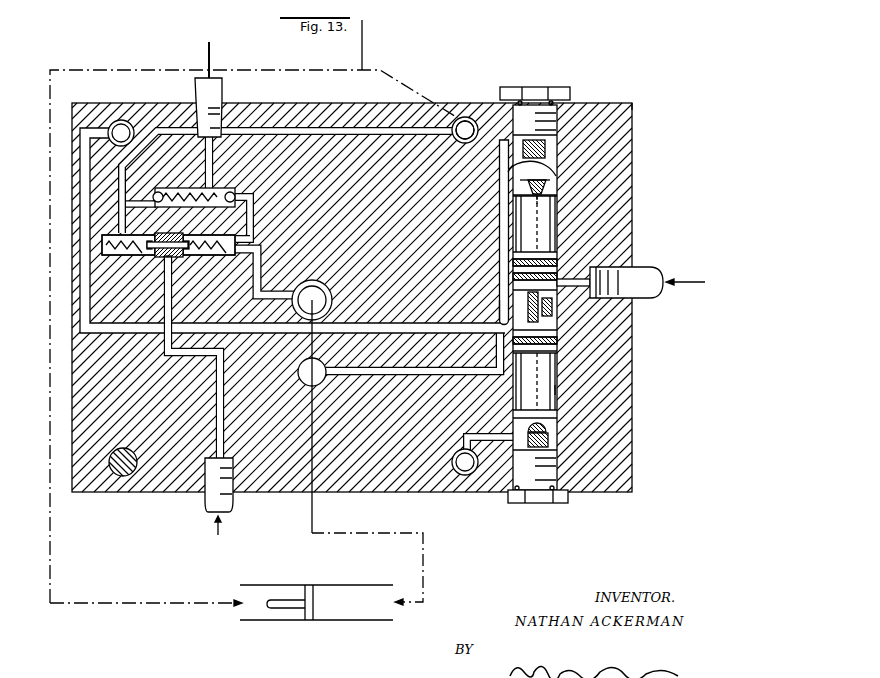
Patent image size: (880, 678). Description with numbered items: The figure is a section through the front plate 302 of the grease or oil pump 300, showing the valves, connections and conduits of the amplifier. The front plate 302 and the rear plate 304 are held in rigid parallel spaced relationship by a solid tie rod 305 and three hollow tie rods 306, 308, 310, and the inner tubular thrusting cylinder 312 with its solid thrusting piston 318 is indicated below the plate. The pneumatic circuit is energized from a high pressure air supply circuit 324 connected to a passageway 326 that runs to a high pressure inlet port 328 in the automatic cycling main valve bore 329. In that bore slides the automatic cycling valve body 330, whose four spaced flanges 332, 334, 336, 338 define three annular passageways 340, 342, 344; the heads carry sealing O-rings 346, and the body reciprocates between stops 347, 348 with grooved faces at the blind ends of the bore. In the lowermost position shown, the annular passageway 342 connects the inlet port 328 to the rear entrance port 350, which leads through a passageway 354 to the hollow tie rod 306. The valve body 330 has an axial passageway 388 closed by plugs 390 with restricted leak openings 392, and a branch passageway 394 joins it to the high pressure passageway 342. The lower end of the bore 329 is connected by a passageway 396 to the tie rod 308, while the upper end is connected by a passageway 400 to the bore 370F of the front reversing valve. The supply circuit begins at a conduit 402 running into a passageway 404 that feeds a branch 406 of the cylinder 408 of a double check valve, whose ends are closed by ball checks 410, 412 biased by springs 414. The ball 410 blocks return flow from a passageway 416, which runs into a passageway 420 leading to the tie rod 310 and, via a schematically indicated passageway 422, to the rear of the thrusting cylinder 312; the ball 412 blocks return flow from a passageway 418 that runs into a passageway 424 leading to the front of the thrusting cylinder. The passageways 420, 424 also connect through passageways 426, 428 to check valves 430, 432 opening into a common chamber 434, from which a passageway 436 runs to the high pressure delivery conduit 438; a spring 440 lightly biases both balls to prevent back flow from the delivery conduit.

The grease or oil pump 300 is at (668, 72).
The front plate 302 is at (634, 470).
The rear plate 304 is at (446, 103).
The solid tie rod 305 is at (123, 477).
The hollow tie rod 306 is at (121, 120).
The hollow tie rod 308 is at (469, 475).
The hollow tie rod 310 is at (465, 117).
The inner tubular thrusting cylinder 312 is at (328, 283).
The solid thrusting piston 318 is at (308, 622).
The high pressure air supply circuit 324 is at (650, 267).
The passageway 326 is at (595, 273).
The high pressure inlet port 328 is at (554, 295).
The automatic cycling main valve bore 329 is at (558, 392).
The automatic cycling valve body 330 is at (548, 367).
The flange 332 is at (560, 431).
The flange 334 is at (559, 345).
The flange 336 is at (559, 253).
The flange 338 is at (557, 180).
The annular passageway 340 is at (517, 394).
The annular passageway 342 is at (519, 287).
The annular passageway 344 is at (514, 226).
The sealing O-rings 346 is at (558, 190).
The stop 347 is at (557, 459).
The stop 348 is at (546, 143).
The rear entrance port 350 is at (501, 314).
The passageway 354 is at (453, 332).
The bore 370F is at (318, 380).
The axial passageway 388 is at (542, 210).
The plugs 390 is at (556, 442).
The restricted openings 392 is at (509, 173).
The branch passageway 394 is at (554, 315).
The passageway 396 is at (489, 433).
The passageway 400 is at (499, 162).
The conduit 402 is at (205, 504).
The passageway 404 is at (222, 407).
The branch 406 is at (170, 258).
The cylinder 408 is at (169, 236).
The ball check 410 is at (135, 266).
The ball check 412 is at (198, 255).
The springs 414 is at (109, 284).
The passageway 416 is at (119, 216).
The passageway 418 is at (250, 239).
The passageway 420 is at (402, 136).
The passageway 422 is at (172, 70).
The passageway 424 is at (260, 276).
The passageway 426 is at (157, 191).
The passageway 428 is at (249, 193).
The check valve 430 is at (195, 177).
The check valve 432 is at (233, 188).
The common chamber 434 is at (179, 231).
The passageway 436 is at (213, 152).
The high pressure delivery conduit 438 is at (226, 89).
The spring 440 is at (191, 192).